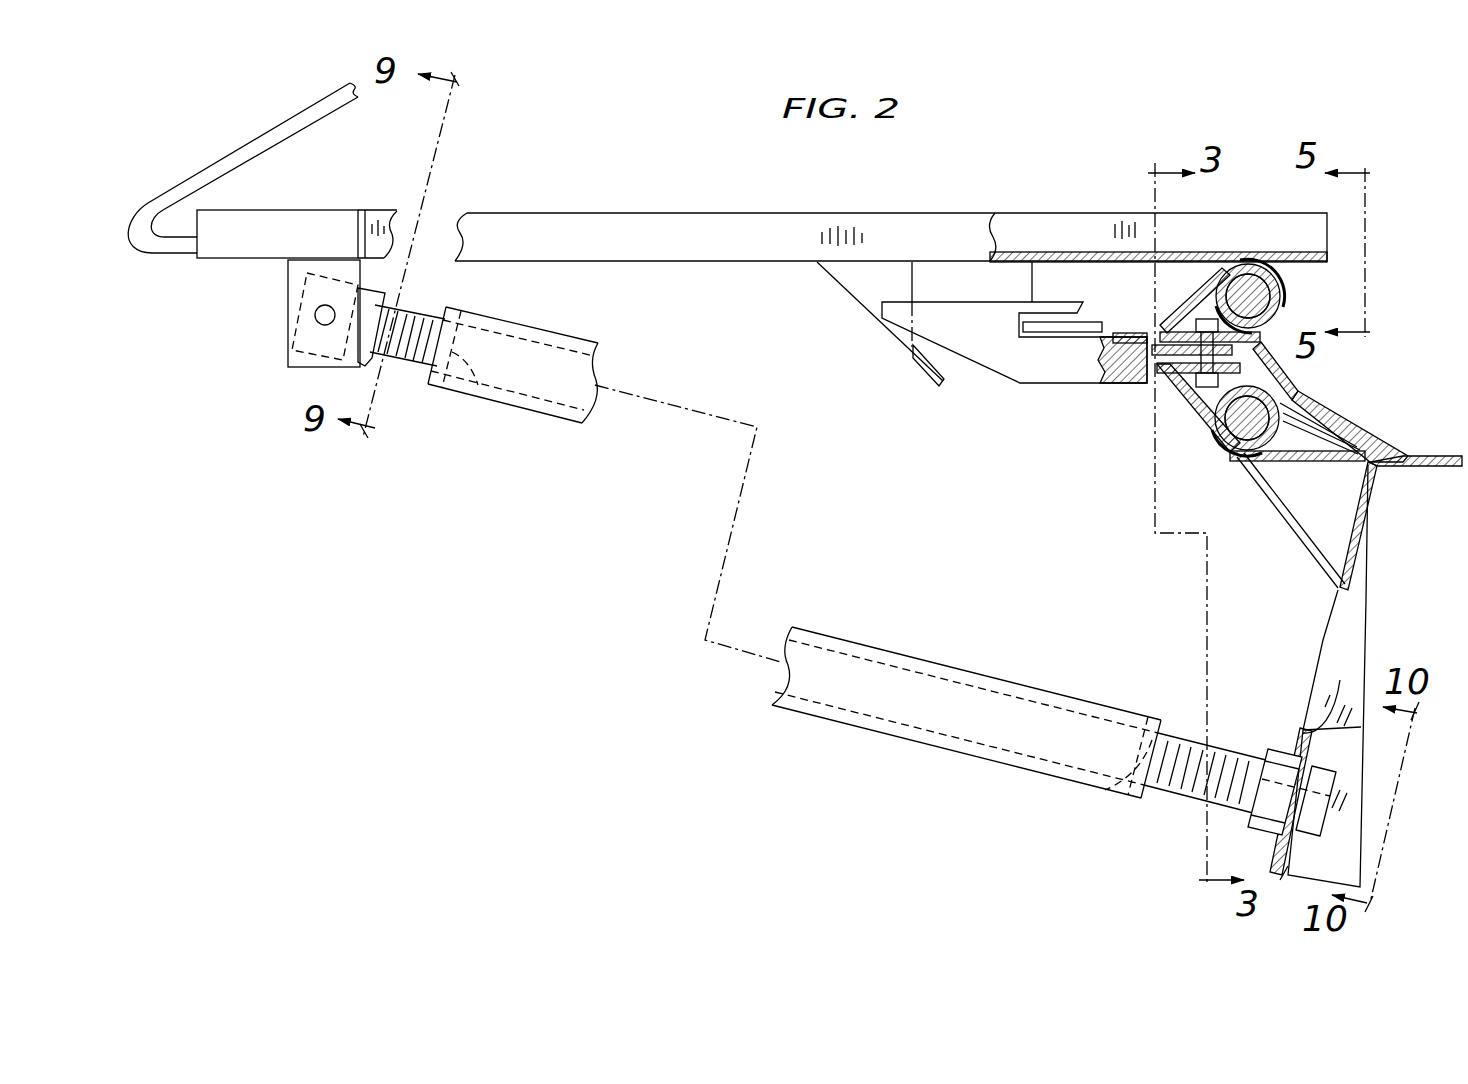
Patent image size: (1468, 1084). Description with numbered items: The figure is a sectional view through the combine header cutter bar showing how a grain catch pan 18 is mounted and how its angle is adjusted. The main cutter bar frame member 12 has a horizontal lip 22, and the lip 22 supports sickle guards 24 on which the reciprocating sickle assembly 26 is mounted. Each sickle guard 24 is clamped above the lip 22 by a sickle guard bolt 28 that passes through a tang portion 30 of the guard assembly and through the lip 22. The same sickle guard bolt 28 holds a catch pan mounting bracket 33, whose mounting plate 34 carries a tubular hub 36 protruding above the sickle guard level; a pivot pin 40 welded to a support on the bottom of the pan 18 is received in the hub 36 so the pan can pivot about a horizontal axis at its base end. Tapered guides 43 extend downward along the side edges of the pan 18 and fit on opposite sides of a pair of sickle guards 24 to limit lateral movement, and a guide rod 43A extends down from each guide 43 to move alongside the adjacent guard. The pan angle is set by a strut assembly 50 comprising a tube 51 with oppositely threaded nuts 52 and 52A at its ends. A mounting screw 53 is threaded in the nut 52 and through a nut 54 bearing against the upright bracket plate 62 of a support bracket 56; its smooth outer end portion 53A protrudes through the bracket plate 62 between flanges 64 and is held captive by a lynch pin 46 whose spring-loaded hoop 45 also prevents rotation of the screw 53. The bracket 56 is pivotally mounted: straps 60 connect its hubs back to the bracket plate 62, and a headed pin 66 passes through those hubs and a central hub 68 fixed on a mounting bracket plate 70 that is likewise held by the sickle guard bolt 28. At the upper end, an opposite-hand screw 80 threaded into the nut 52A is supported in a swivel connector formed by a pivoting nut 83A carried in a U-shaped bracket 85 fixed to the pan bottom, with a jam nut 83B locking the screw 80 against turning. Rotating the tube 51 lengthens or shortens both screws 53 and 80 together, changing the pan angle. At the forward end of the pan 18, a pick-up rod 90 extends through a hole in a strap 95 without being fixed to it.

The main cutter bar frame member 12 is at (1380, 440).
The catch pan 18 is at (912, 228).
The horizontal lip 22 is at (1155, 348).
The sickle guard 24 is at (1057, 370).
The sickle assembly 26 is at (1120, 313).
The sickle guard bolt 28 is at (1207, 390).
The tang portion 30 is at (1180, 400).
The catch pan mounting bracket 33 is at (1290, 303).
The mounting plate 34 is at (1283, 355).
The tubular hub 36 is at (1282, 297).
The pivot pin 40 is at (1247, 283).
The guide 43 is at (857, 303).
The guide rod 43A is at (923, 373).
The spring-loaded hoop 45 is at (1283, 833).
The lynch pin 46 is at (1285, 872).
The strut assembly 50 is at (940, 653).
The tube 51 is at (543, 333).
The threaded nut 52 is at (1123, 757).
The nut 52A is at (478, 385).
The mounting screw 53 is at (1180, 742).
The outer end portion 53A is at (1324, 797).
The nut 54 is at (1277, 751).
The support bracket 56 is at (1382, 582).
The strap 60 is at (1297, 540).
The bracket plate 62 is at (1340, 707).
The flange 64 is at (1347, 837).
The headed pin 66 is at (1243, 440).
The central hub 68 is at (1285, 430).
The mounting bracket plate 70 is at (1330, 410).
The screw 80 is at (420, 313).
The nut 83A is at (286, 356).
The lock nut 83B is at (383, 292).
The U-shaped bracket 85 is at (292, 295).
The pick-up rod 90 is at (257, 135).
The strap 95 is at (277, 218).